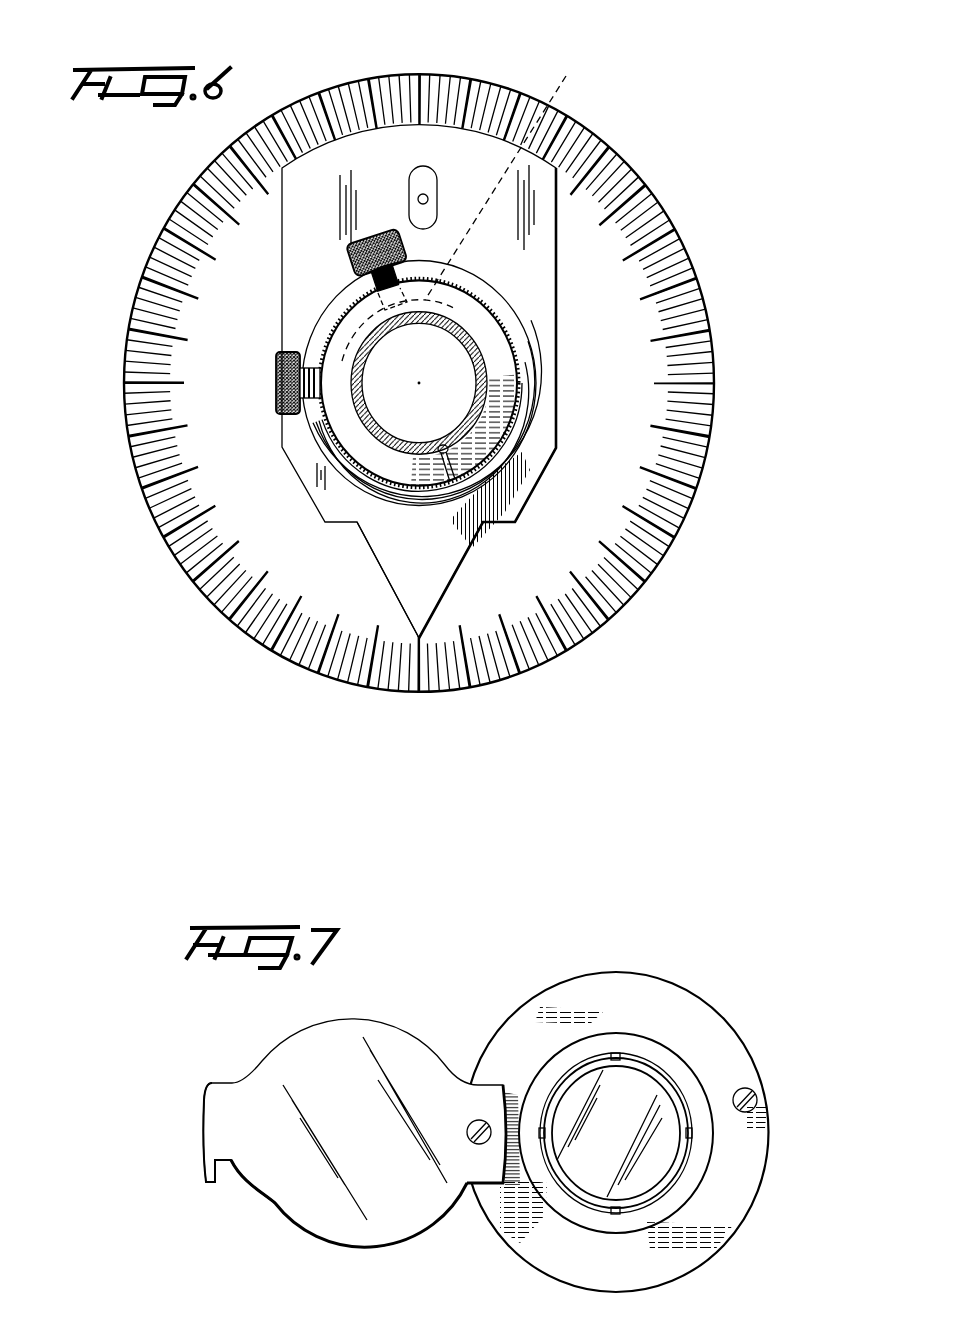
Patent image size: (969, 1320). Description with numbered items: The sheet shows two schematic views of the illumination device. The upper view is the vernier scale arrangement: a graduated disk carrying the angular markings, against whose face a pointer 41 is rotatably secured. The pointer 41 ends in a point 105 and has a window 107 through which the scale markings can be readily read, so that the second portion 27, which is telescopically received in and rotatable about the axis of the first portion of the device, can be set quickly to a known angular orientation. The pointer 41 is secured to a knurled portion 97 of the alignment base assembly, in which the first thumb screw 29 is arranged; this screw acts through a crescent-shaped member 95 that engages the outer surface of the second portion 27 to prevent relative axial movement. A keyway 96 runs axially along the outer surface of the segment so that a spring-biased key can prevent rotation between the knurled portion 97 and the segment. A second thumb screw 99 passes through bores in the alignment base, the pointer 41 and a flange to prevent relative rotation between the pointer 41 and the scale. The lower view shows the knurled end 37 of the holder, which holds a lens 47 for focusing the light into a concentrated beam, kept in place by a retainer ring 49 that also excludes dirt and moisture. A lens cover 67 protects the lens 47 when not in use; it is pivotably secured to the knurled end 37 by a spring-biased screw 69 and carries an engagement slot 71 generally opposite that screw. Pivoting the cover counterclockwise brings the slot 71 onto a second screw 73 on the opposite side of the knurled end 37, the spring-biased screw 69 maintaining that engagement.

In FIG. 6, the second portion 27 is at (513, 374).
In FIG. 6, the first thumb screw 29 is at (367, 237).
In FIG. 6, the pointer 41 is at (540, 182).
In FIG. 6, the crescent-shaped member 95 is at (464, 206).
In FIG. 6, the keyway 96 is at (652, 563).
In FIG. 6, the knurled portion 97 is at (488, 328).
In FIG. 6, the second thumb screw 99 is at (300, 384).
In FIG. 6, the point 105 is at (419, 638).
In FIG. 6, the window 107 is at (433, 168).
In FIG. 7, the knurled end 37 is at (617, 987).
In FIG. 7, the lens 47 is at (645, 1093).
In FIG. 7, the retainer ring 49 is at (640, 1062).
In FIG. 7, the lens cover 67 is at (377, 1028).
In FIG. 7, the spring-biased screw 69 is at (479, 1143).
In FIG. 7, the engagement slot 71 is at (219, 1172).
In FIG. 7, the second screw 73 is at (757, 1100).